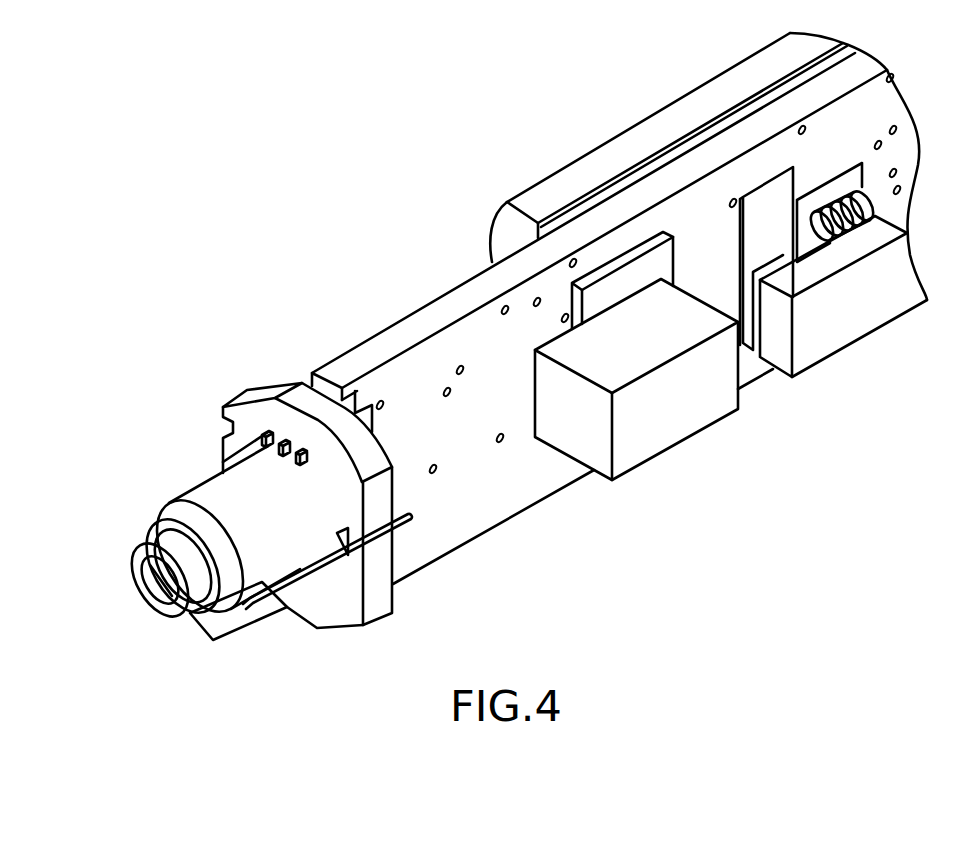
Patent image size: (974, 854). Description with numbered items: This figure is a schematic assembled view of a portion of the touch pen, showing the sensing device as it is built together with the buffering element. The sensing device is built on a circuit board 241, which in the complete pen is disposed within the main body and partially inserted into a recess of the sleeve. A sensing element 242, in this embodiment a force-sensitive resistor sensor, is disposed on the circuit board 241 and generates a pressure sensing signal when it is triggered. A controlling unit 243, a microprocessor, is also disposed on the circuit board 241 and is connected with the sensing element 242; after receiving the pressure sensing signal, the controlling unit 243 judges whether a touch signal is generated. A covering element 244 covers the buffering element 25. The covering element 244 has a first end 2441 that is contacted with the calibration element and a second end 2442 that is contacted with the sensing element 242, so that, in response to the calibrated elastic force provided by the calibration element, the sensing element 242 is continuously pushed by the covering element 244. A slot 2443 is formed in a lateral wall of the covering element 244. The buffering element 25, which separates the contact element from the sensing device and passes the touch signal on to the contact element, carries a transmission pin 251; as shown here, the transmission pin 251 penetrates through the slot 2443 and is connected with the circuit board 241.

The circuit board 241 is at (503, 500).
The sensing element 242 is at (248, 458).
The controlling unit 243 is at (650, 142).
The covering element 244 is at (202, 493).
The first end 2441 is at (152, 535).
The second end 2442 is at (277, 500).
The slot 2443 is at (253, 598).
The transmission pin 251 is at (330, 563).
The buffering element 25 is at (141, 608).